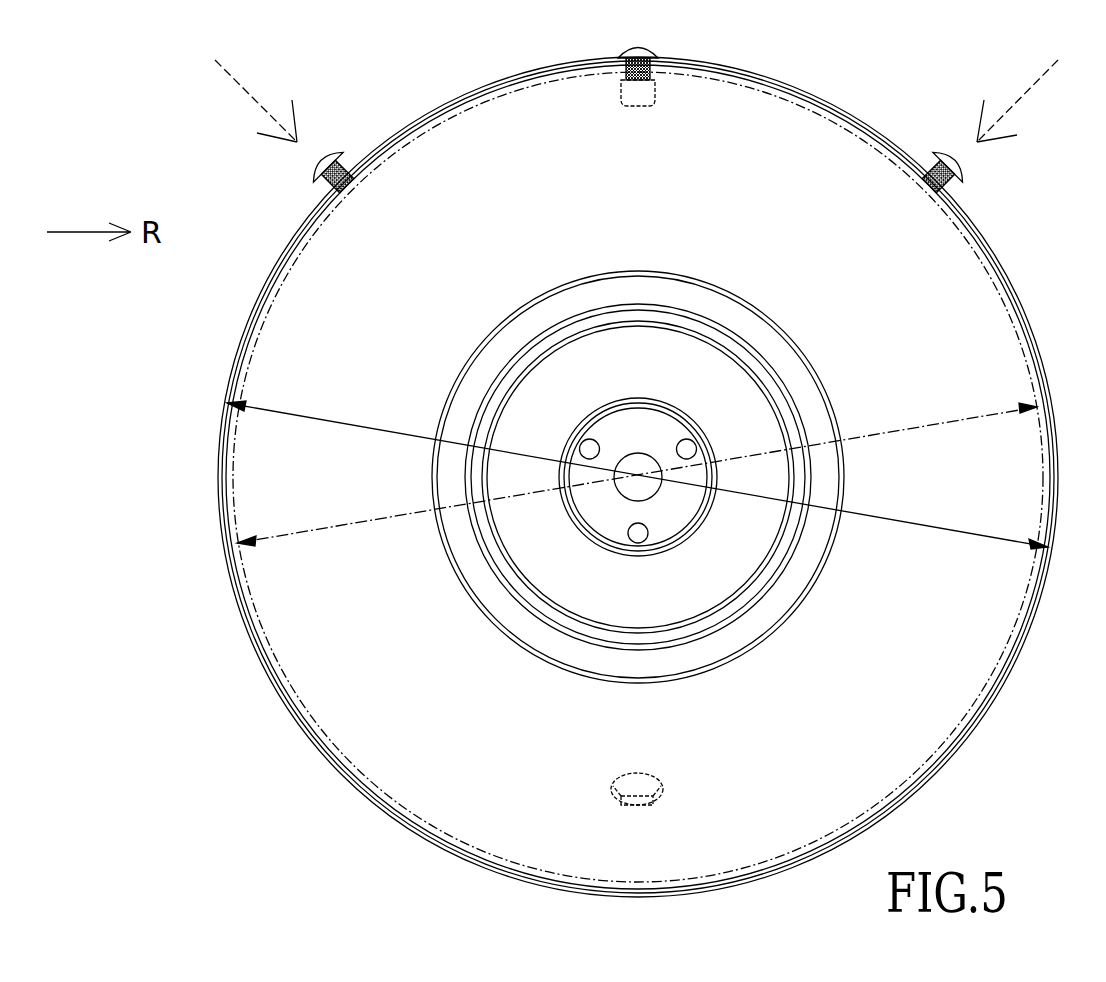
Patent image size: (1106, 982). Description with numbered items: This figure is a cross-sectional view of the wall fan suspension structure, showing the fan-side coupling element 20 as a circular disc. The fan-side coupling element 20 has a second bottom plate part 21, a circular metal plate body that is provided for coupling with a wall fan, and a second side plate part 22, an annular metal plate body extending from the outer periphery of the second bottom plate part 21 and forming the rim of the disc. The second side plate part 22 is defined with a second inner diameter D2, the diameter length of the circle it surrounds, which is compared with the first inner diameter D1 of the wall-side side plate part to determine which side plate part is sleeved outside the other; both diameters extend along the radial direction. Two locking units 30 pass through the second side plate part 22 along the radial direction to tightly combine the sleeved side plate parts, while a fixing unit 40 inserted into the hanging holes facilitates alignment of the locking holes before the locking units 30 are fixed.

The fan-side coupling element 20 is at (420, 111).
The second bottom plate part 21 is at (287, 320).
The second side plate part 22 is at (815, 95).
The locking unit 30 is at (308, 162).
The fixing unit 40 is at (633, 50).
The first inner diameter D1 is at (940, 530).
The second inner diameter D2 is at (935, 422).